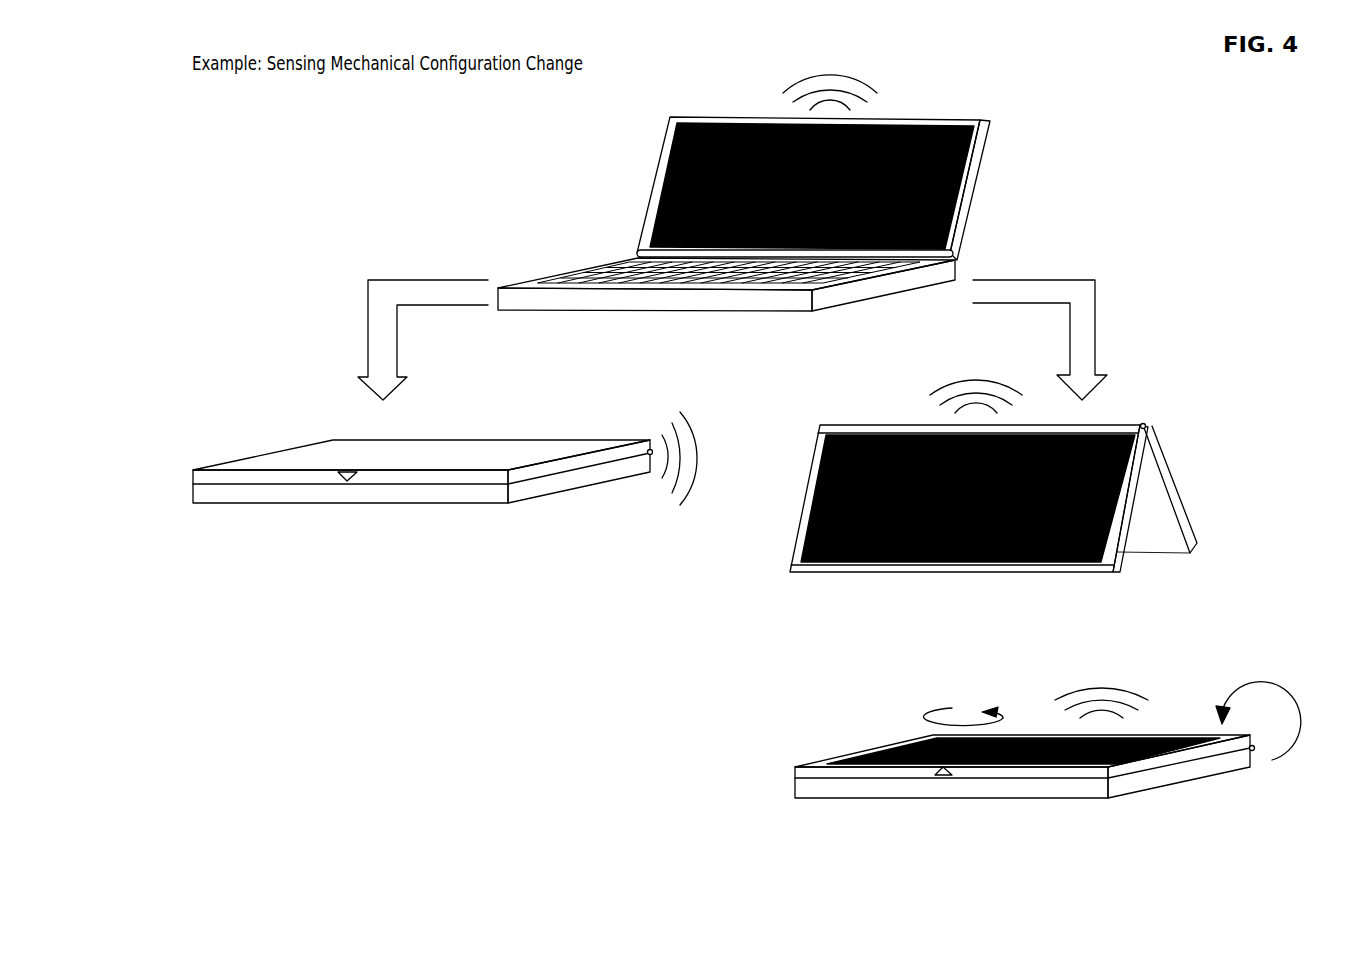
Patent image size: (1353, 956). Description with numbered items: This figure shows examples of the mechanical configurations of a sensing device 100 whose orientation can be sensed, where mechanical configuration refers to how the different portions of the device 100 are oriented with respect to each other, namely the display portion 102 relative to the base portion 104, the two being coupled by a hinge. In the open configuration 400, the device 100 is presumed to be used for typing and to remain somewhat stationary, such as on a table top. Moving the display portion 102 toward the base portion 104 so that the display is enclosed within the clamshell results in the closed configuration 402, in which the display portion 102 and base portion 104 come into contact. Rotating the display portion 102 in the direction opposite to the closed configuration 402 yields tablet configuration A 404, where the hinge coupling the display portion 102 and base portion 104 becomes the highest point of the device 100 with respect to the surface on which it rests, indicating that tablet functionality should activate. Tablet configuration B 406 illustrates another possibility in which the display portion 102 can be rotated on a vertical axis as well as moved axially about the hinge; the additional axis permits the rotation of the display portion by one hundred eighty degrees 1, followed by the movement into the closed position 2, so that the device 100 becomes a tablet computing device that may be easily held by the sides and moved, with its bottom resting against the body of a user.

The device 100 is at (743, 193).
The display portion 102 is at (653, 185).
The base portion 104 is at (602, 257).
The open configuration 400 is at (743, 207).
The closed configuration 402 is at (447, 530).
The tablet configuration A 404 is at (1050, 613).
The tablet configuration B 406 is at (1048, 754).
The rotation of display portion 180 degrees 1 is at (963, 713).
The movement into closed position 2 is at (1258, 721).